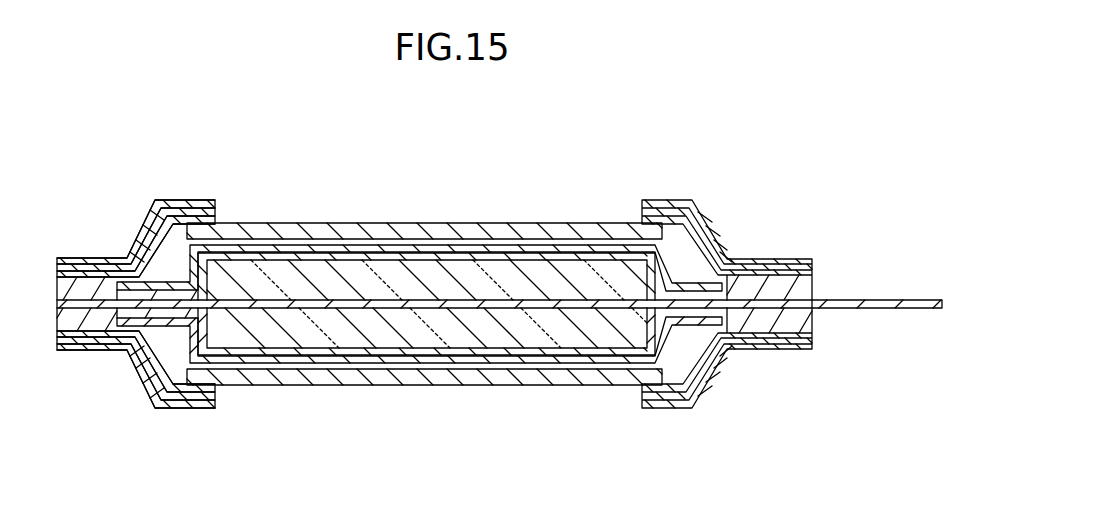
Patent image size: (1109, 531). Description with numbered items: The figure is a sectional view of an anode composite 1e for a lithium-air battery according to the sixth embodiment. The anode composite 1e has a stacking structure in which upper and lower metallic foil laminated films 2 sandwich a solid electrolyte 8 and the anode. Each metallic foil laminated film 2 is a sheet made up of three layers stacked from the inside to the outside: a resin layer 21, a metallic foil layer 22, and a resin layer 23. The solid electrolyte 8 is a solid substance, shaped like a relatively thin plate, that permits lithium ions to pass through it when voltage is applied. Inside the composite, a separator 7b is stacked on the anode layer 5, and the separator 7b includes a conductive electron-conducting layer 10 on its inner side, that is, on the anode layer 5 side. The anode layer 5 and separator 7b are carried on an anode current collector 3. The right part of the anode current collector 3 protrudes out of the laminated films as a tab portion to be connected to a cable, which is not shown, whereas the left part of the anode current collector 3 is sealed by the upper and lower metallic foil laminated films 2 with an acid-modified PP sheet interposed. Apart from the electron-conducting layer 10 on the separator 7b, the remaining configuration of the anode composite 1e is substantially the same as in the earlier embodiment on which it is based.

The anode composite 1e is at (655, 163).
The metallic foil laminated film 2 is at (135, 137).
The resin layer 21 is at (218, 208).
The metallic foil layer 22 is at (198, 207).
The resin layer 23 is at (154, 207).
The anode current collector 3 is at (877, 300).
The anode layer 5 is at (381, 278).
The separator 7b is at (485, 248).
The solid electrolyte 8 is at (428, 230).
The electron-conducting layer 10 is at (554, 255).